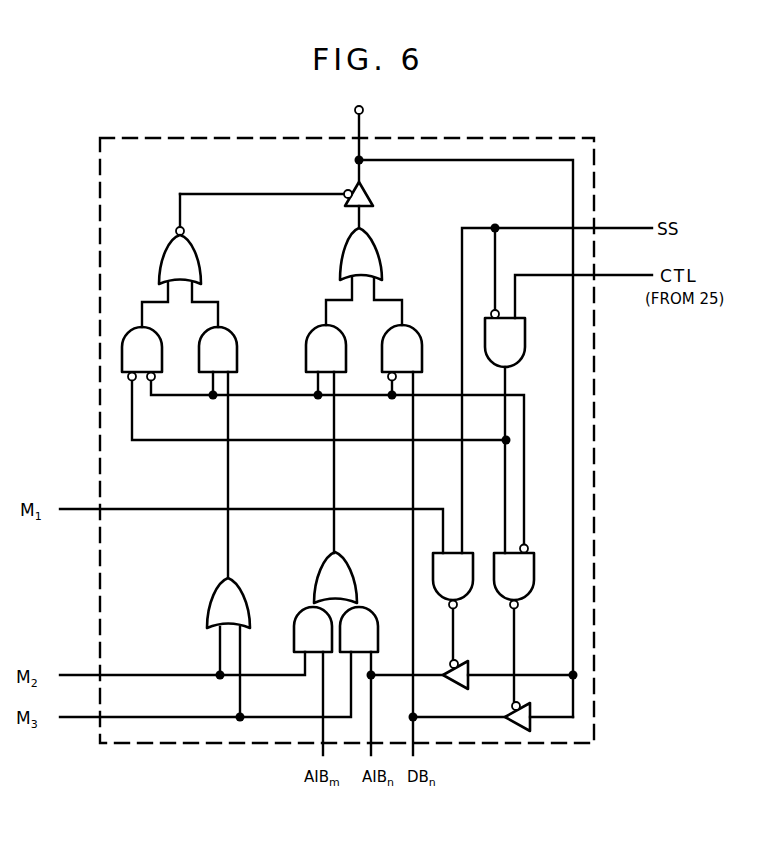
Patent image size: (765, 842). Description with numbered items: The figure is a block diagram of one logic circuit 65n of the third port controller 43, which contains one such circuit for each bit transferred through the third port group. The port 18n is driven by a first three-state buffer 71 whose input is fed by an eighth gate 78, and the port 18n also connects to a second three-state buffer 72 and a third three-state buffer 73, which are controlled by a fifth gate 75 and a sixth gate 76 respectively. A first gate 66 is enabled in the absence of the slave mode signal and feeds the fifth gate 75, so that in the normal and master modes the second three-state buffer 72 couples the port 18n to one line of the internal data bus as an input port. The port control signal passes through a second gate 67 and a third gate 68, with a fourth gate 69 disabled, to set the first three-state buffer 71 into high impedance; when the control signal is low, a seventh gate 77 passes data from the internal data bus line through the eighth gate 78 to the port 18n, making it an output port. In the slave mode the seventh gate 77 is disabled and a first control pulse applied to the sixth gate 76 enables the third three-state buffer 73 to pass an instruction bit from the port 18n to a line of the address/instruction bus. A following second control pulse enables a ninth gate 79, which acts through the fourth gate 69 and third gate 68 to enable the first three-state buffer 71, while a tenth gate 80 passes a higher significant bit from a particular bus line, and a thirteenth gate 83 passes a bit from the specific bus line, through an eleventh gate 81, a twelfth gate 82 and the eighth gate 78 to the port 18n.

The port 18n is at (365, 112).
The first three-state buffer 71 is at (377, 205).
The eighth gate 78 is at (380, 282).
The third gate 68 is at (200, 271).
The second gate 67 is at (156, 348).
The fourth gate 69 is at (230, 352).
The twelfth gate 82 is at (338, 350).
The seventh gate 77 is at (411, 352).
The first gate 66 is at (520, 352).
The sixth gate 76 is at (462, 548).
The fifth gate 75 is at (532, 552).
The third three-state buffer 73 is at (462, 660).
The second three-state buffer 72 is at (530, 712).
The ninth gate 79 is at (235, 592).
The eleventh gate 81 is at (355, 586).
The tenth gate 80 is at (300, 621).
The thirteenth gate 83 is at (376, 641).
The logic circuit 65n is at (596, 431).
The third port controller 43 is at (386, 440).